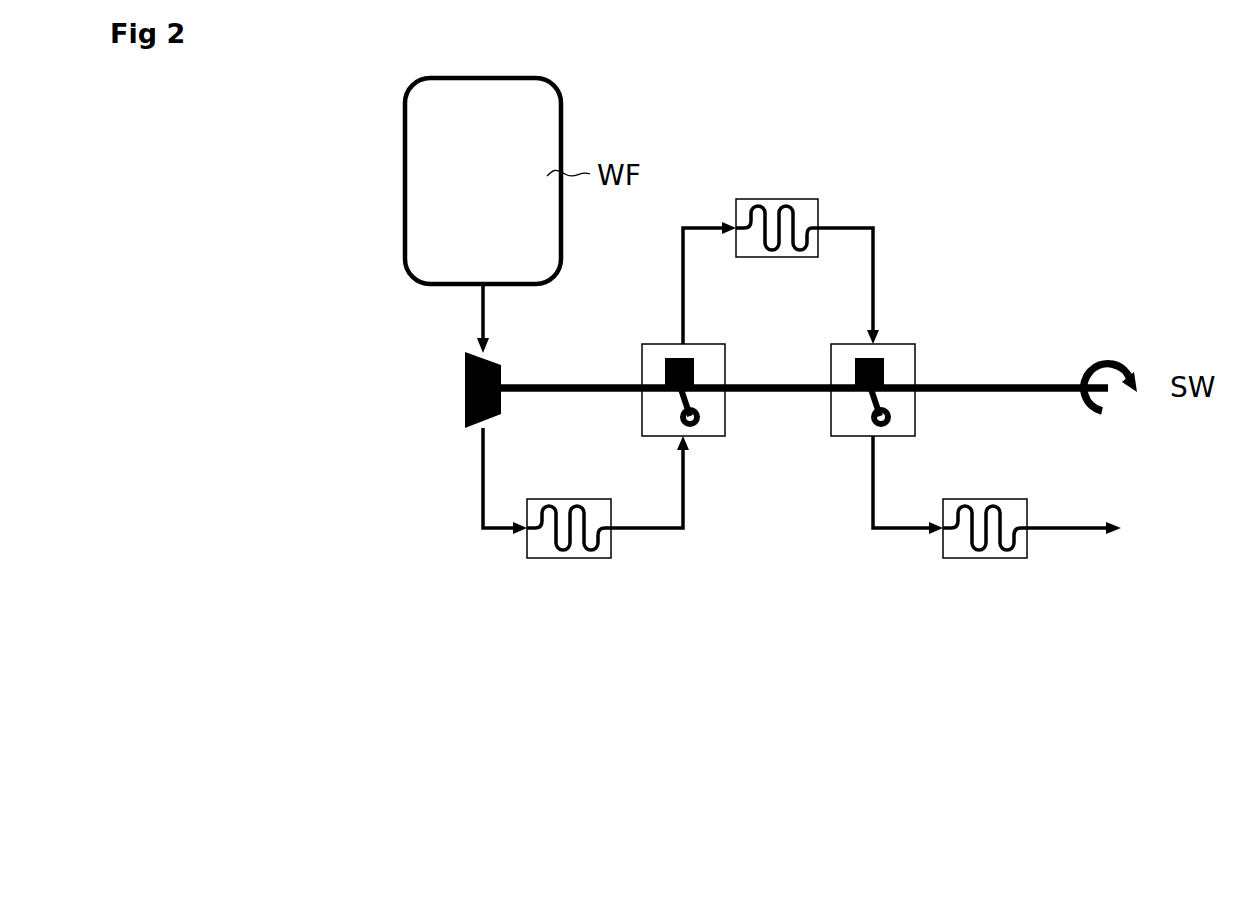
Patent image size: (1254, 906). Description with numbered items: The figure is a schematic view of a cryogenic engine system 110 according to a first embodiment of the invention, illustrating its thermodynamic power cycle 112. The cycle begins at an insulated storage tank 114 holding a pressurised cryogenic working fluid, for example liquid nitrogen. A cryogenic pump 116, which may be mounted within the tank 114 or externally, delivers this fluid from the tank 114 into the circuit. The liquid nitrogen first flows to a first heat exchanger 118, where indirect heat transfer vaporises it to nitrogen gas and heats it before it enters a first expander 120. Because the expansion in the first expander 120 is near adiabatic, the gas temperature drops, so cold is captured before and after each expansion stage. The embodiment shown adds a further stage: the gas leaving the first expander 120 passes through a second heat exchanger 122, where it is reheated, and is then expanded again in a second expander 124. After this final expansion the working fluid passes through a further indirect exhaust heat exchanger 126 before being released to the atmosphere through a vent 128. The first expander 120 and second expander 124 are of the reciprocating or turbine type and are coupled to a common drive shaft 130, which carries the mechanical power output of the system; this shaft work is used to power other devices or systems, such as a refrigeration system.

The cryogenic engine system 110 is at (709, 543).
The thermodynamic power cycle 112 is at (938, 222).
The insulated storage tank 114 is at (547, 111).
The cryogenic pump 116 is at (463, 405).
The first heat exchanger 118 is at (550, 552).
The first expander 120 is at (657, 357).
The second heat exchanger 122 is at (810, 207).
The second expander 124 is at (903, 353).
The exhaust heat exchanger 126 is at (993, 552).
The vent 128 is at (1088, 525).
The drive shaft 130 is at (1038, 385).